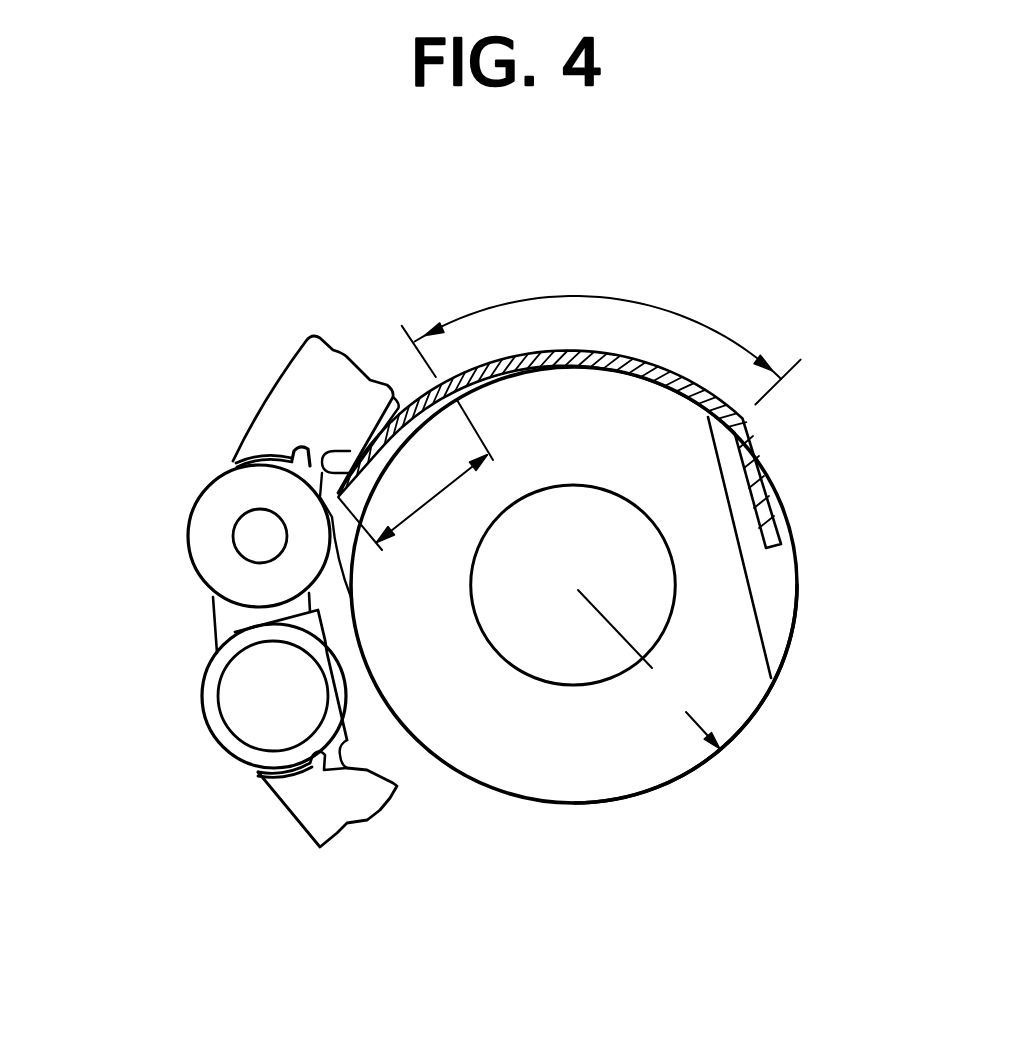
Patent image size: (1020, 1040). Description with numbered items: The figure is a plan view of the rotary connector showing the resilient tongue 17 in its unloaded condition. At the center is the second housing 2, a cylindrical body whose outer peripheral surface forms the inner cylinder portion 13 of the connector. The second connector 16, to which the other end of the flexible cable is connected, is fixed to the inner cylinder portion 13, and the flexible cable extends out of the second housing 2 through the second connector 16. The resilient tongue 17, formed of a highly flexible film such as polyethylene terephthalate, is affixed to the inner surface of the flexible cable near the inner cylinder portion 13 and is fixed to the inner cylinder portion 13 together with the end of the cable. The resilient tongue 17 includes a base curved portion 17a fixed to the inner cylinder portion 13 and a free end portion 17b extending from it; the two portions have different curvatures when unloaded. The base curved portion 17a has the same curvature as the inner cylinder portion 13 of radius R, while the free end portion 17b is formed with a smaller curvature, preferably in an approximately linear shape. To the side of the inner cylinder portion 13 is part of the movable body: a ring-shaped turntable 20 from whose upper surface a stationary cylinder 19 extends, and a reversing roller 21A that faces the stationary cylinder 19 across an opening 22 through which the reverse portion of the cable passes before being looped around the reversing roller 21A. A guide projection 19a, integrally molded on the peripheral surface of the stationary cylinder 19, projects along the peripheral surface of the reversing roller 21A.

The second housing 2 is at (513, 747).
The inner cylinder portion 13 is at (677, 783).
The second connector 16 is at (773, 607).
The resilient tongue 17 is at (663, 363).
The base curved portion 17a is at (590, 297).
The free end portion 17b is at (428, 507).
The stationary cylinder 19 is at (232, 747).
The guide projection 19a is at (312, 622).
The turntable 20 is at (278, 403).
The reversing roller 21A is at (205, 520).
The opening 22 is at (212, 625).
The radius of the inner cylinder portion R is at (649, 669).